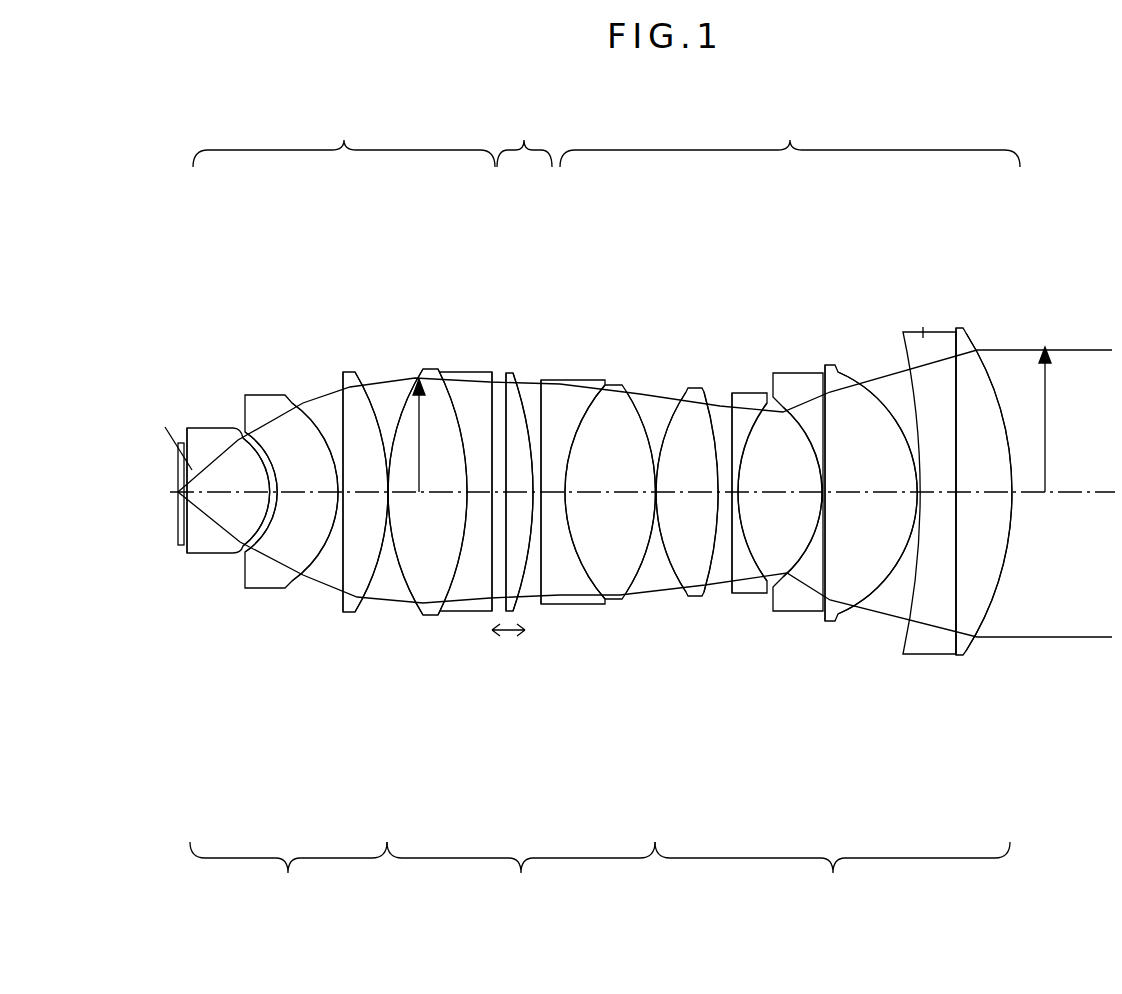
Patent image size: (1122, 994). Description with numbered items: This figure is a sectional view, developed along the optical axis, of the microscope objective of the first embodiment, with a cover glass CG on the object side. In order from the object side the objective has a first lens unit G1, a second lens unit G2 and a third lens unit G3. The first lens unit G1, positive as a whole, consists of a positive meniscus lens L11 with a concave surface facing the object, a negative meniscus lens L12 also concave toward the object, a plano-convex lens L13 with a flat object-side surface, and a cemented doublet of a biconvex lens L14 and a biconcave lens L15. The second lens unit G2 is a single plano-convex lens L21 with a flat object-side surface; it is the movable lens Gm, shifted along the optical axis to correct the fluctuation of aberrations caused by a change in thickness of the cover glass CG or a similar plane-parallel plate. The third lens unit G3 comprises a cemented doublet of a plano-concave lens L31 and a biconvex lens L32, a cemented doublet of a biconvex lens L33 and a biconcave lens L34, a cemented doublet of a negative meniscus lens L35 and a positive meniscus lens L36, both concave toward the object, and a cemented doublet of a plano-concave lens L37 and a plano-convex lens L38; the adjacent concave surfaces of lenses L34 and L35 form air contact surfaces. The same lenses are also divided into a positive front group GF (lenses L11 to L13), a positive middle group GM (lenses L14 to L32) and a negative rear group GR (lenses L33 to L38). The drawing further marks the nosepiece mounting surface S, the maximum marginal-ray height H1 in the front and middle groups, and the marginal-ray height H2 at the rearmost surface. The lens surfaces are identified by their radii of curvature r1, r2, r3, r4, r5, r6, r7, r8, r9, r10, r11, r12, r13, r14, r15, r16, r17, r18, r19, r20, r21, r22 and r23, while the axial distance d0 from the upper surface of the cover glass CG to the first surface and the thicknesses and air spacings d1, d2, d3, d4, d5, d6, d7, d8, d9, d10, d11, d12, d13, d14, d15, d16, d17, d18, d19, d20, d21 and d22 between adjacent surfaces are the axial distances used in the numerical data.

The cover glass CG is at (178, 440).
The positive meniscus lens L11 is at (215, 428).
The negative meniscus lens L12 is at (258, 400).
The plano-convex lens L13 is at (347, 372).
The biconvex lens L14 is at (428, 368).
The biconcave lens L15 is at (458, 372).
The plano-convex lens L21 is at (508, 373).
The plano-concave lens L31 is at (570, 380).
The biconvex lens L32 is at (617, 385).
The biconvex lens L33 is at (697, 388).
The biconcave lens L34 is at (752, 393).
The negative meniscus lens L35 is at (805, 380).
The positive meniscus lens L36 is at (828, 365).
The plano-concave lens L37 is at (922, 332).
The plano-convex lens L38 is at (960, 328).
The first lens unit G1 is at (344, 138).
The second lens unit G2 is at (524, 138).
The third lens unit G3 is at (790, 138).
The front group GF is at (288, 873).
The middle group GM is at (521, 873).
The rear group GR is at (832, 873).
The movable lens Gm is at (512, 665).
The nosepiece mounting surface S is at (938, 260).
The maximum height of marginal ray H1 is at (436, 435).
The height of marginal ray at rearmost surface H2 is at (1063, 419).
The radius of curvature of first surface r1 is at (200, 430).
The radius of curvature of second surface r2 is at (230, 428).
The radius of curvature of third surface r3 is at (262, 428).
The radius of curvature of fourth surface r4 is at (317, 428).
The radius of curvature of fifth surface r5 is at (343, 390).
The radius of curvature of sixth surface r6 is at (365, 391).
The radius of curvature of seventh surface r7 is at (411, 390).
The radius of curvature of eighth surface r8 is at (430, 375).
The radius of curvature of ninth surface r9 is at (473, 375).
The radius of curvature of tenth surface r10 is at (503, 373).
The radius of curvature of eleventh surface r11 is at (528, 385).
The radius of curvature of twelfth surface r12 is at (541, 380).
The radius of curvature of thirteenth surface r13 is at (587, 380).
The radius of curvature of fourteenth surface r14 is at (643, 395).
The radius of curvature of fifteenth surface r15 is at (670, 390).
The radius of curvature of sixteenth surface r16 is at (717, 392).
The radius of curvature of seventeenth surface r17 is at (736, 393).
The radius of curvature of eighteenth surface r18 is at (797, 420).
The radius of curvature of nineteenth surface r19 is at (847, 493).
The radius of curvature of twentieth surface r20 is at (875, 395).
The radius of curvature of twenty-first surface r21 is at (893, 414).
The radius of curvature of twenty-second surface r22 is at (960, 332).
The radius of curvature of twenty-third surface r23 is at (985, 365).
The axial distance from cover glass to first surface d0 is at (177, 497).
The first axial distance d1 is at (212, 497).
The second axial distance d2 is at (273, 497).
The third axial distance d3 is at (305, 497).
The fourth axial distance d4 is at (337, 497).
The fifth axial distance d5 is at (367, 497).
The sixth axial distance d6 is at (387, 497).
The seventh axial distance d7 is at (430, 497).
The eighth axial distance d8 is at (470, 497).
The ninth axial distance d9 is at (490, 497).
The tenth axial distance d10 is at (523, 497).
The eleventh axial distance d11 is at (535, 497).
The twelfth axial distance d12 is at (557, 497).
The thirteenth axial distance d13 is at (605, 497).
The fourteenth axial distance d14 is at (653, 497).
The fifteenth axial distance d15 is at (693, 497).
The sixteenth axial distance d16 is at (732, 497).
The seventeenth axial distance d17 is at (775, 497).
The eighteenth axial distance d18 is at (822, 497).
The nineteenth axial distance d19 is at (858, 497).
The twentieth axial distance d20 is at (900, 497).
The twenty-first axial distance d21 is at (940, 497).
The twenty-second axial distance d22 is at (975, 630).